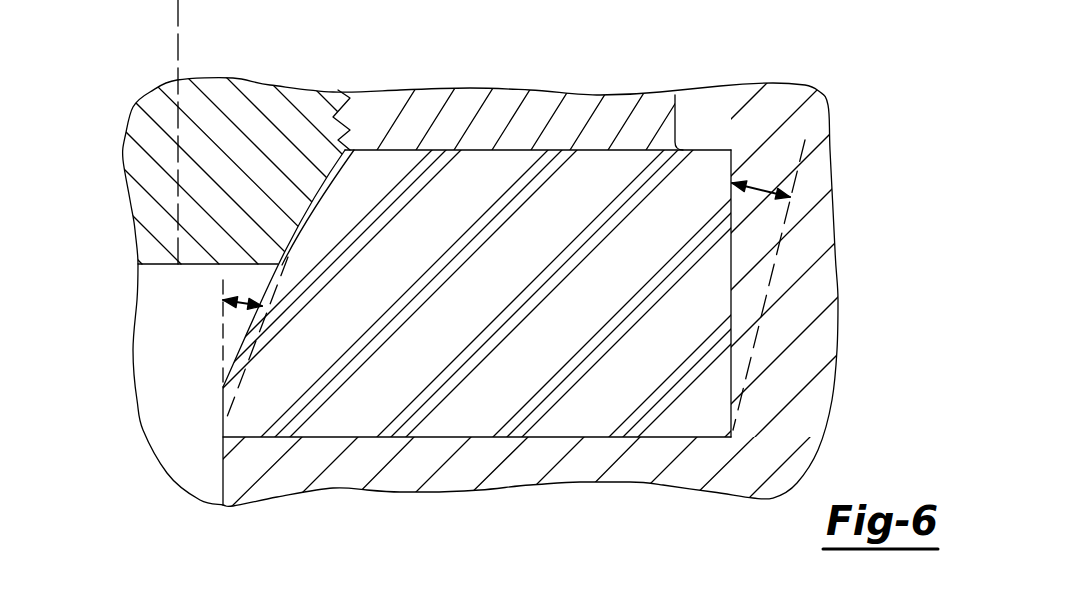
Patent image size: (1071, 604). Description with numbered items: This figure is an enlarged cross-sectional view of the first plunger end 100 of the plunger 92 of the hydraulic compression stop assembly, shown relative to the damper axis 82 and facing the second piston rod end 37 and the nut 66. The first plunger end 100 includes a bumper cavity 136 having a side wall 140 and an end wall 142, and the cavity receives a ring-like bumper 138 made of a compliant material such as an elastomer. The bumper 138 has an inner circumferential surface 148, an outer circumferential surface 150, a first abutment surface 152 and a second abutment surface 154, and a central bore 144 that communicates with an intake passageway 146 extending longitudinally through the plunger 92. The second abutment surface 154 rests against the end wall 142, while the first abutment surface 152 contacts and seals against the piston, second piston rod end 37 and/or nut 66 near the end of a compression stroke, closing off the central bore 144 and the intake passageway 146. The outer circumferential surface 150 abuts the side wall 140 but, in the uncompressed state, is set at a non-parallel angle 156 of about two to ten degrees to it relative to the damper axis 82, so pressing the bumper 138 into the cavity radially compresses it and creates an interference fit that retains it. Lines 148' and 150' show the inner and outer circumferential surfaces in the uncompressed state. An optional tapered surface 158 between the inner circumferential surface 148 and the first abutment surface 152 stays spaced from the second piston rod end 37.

The first plunger end 100 is at (792, 82).
The second piston rod end 37 is at (147, 197).
The nut 66 is at (503, 113).
The bumper cavity 136 is at (710, 123).
The first abutment surface 152 is at (613, 149).
The side wall 140 is at (729, 148).
The tapered surface 158 is at (279, 258).
The line illustrating the inner circumferential surface 148' is at (321, 333).
The non-parallel angle 156 is at (247, 300).
The central bore 144 is at (182, 335).
The inner circumferential surface 148 is at (140, 446).
The intake passageway 146 is at (200, 472).
The end wall 142 is at (343, 436).
The bumper 138 is at (480, 392).
The second abutment surface 154 is at (608, 438).
The outer circumferential surface 150 is at (833, 293).
The line illustrating the outer circumferential surface 150' is at (845, 285).
The plunger 92 is at (812, 413).
The damper axis 82 is at (176, 42).